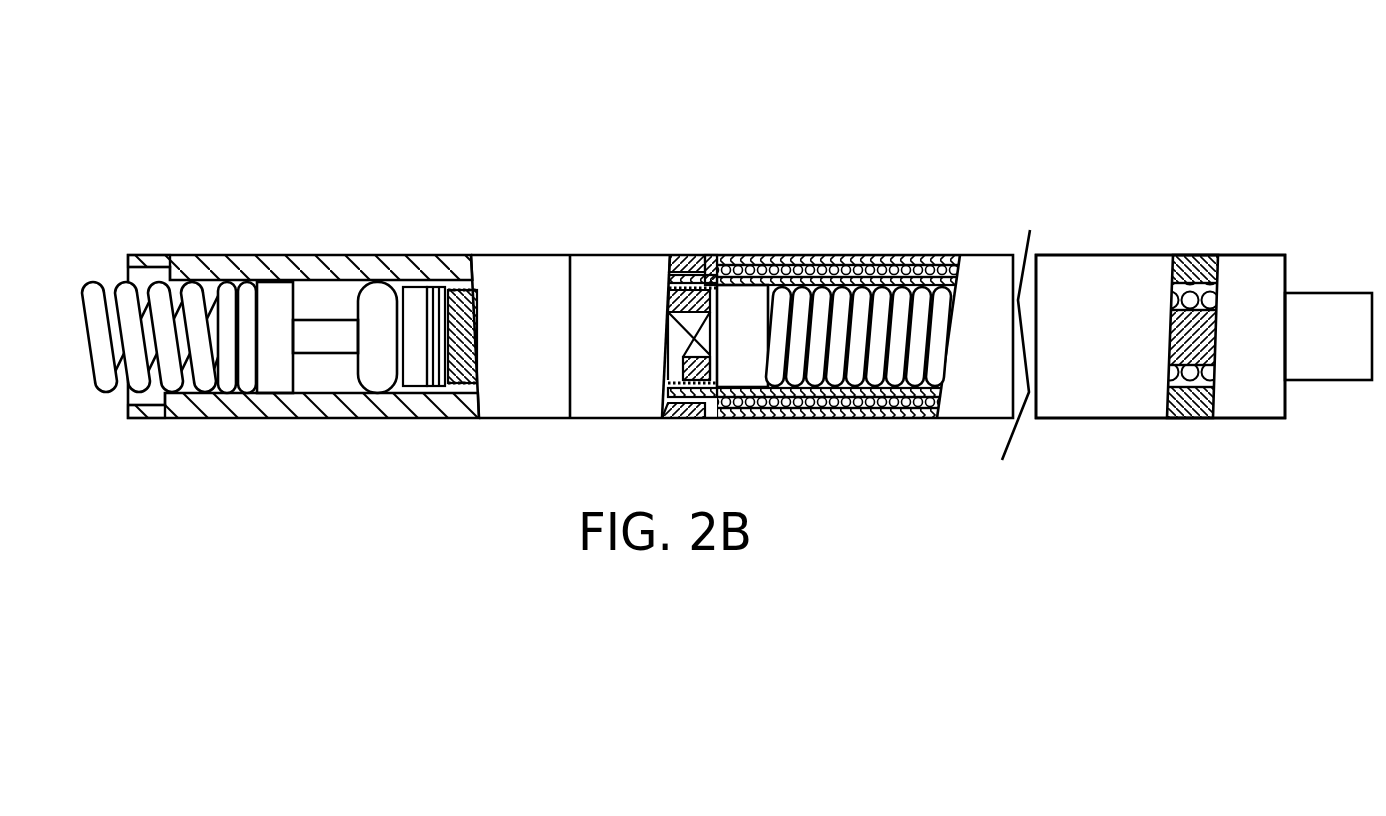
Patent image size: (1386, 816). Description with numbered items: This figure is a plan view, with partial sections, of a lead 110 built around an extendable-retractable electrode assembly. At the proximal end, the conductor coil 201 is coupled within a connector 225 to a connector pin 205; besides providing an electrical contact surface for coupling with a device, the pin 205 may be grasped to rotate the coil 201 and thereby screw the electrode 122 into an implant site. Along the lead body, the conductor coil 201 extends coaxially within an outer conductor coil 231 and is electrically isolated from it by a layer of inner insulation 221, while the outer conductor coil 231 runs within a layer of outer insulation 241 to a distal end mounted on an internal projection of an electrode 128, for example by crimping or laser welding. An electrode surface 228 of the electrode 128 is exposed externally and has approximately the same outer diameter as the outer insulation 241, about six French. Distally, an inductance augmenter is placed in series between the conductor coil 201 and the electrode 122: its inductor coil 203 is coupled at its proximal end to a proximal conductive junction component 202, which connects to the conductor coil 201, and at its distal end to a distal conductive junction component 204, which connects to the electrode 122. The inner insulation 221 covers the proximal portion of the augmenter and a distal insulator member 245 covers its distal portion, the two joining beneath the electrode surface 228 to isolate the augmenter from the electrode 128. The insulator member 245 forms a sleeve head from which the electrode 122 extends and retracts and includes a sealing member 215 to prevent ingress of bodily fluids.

The lead 110 is at (282, 140).
The electrode 122 is at (99, 412).
The distal conductive junction component 204 is at (325, 303).
The sealing member 215 is at (373, 297).
The inductor coil 203 is at (443, 290).
The distal insulator member 245 is at (502, 393).
The electrode surface 228 is at (630, 358).
The electrode 128 is at (694, 265).
The proximal conductive junction component 202 is at (722, 266).
The outer conductor coil 231 is at (941, 262).
The inner insulation 221 is at (801, 270).
The outer insulation 241 is at (877, 265).
The conductor coil 201 is at (1193, 265).
The connector 225 is at (1146, 442).
The connector pin 205 is at (1303, 367).